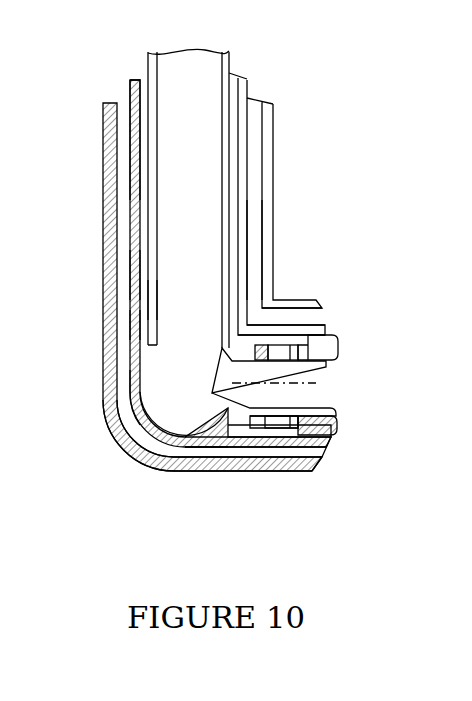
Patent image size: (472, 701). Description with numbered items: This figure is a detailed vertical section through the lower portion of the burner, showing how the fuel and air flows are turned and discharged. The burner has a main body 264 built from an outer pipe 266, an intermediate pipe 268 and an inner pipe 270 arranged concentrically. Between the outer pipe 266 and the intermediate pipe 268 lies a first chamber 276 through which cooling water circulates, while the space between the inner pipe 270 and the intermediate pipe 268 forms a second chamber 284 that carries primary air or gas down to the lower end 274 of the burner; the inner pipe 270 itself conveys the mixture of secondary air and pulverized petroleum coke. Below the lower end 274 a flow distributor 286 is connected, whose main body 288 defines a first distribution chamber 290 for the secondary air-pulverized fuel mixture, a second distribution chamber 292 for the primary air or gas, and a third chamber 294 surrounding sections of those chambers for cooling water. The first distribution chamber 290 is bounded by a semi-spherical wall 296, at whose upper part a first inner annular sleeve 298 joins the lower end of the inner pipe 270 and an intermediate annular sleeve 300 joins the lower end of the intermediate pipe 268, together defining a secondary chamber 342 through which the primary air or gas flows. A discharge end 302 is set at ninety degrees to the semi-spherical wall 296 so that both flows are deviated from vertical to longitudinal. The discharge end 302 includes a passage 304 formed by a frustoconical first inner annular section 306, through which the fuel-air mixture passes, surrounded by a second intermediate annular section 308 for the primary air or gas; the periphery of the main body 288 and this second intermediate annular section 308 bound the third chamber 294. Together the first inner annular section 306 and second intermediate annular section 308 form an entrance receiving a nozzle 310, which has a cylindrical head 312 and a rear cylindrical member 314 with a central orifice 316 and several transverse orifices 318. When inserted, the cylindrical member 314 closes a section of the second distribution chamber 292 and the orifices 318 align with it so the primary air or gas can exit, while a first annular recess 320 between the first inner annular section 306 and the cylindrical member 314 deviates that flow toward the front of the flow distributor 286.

The main body 264 is at (288, 163).
The outer pipe 266 is at (103, 148).
The intermediate pipe 268 is at (130, 92).
The inner pipe 270 is at (229, 52).
The lower end 274 is at (255, 278).
The first chamber 276 is at (120, 124).
The second chamber 284 is at (232, 212).
The flow distributor 286 is at (144, 473).
The main body 288 is at (124, 437).
The first distribution chamber 290 is at (173, 418).
The second distribution chamber 292 is at (280, 337).
The third chamber 294 is at (285, 313).
The semi-spherical wall 296 is at (130, 388).
The first inner annular sleeve 298 is at (147, 298).
The intermediate annular sleeve 300 is at (130, 275).
The discharge end 302 is at (317, 463).
The passage 304 is at (326, 383).
The first inner annular section 306 is at (378, 368).
The second intermediate annular section 308 is at (285, 346).
The nozzle 310 is at (345, 350).
The cylindrical head 312 is at (318, 340).
The cylindrical member 314 is at (330, 435).
The central orifice 316 is at (306, 363).
The orifices 318 is at (184, 405).
The first annular recess 320 is at (317, 408).
The secondary chamber 342 is at (140, 323).